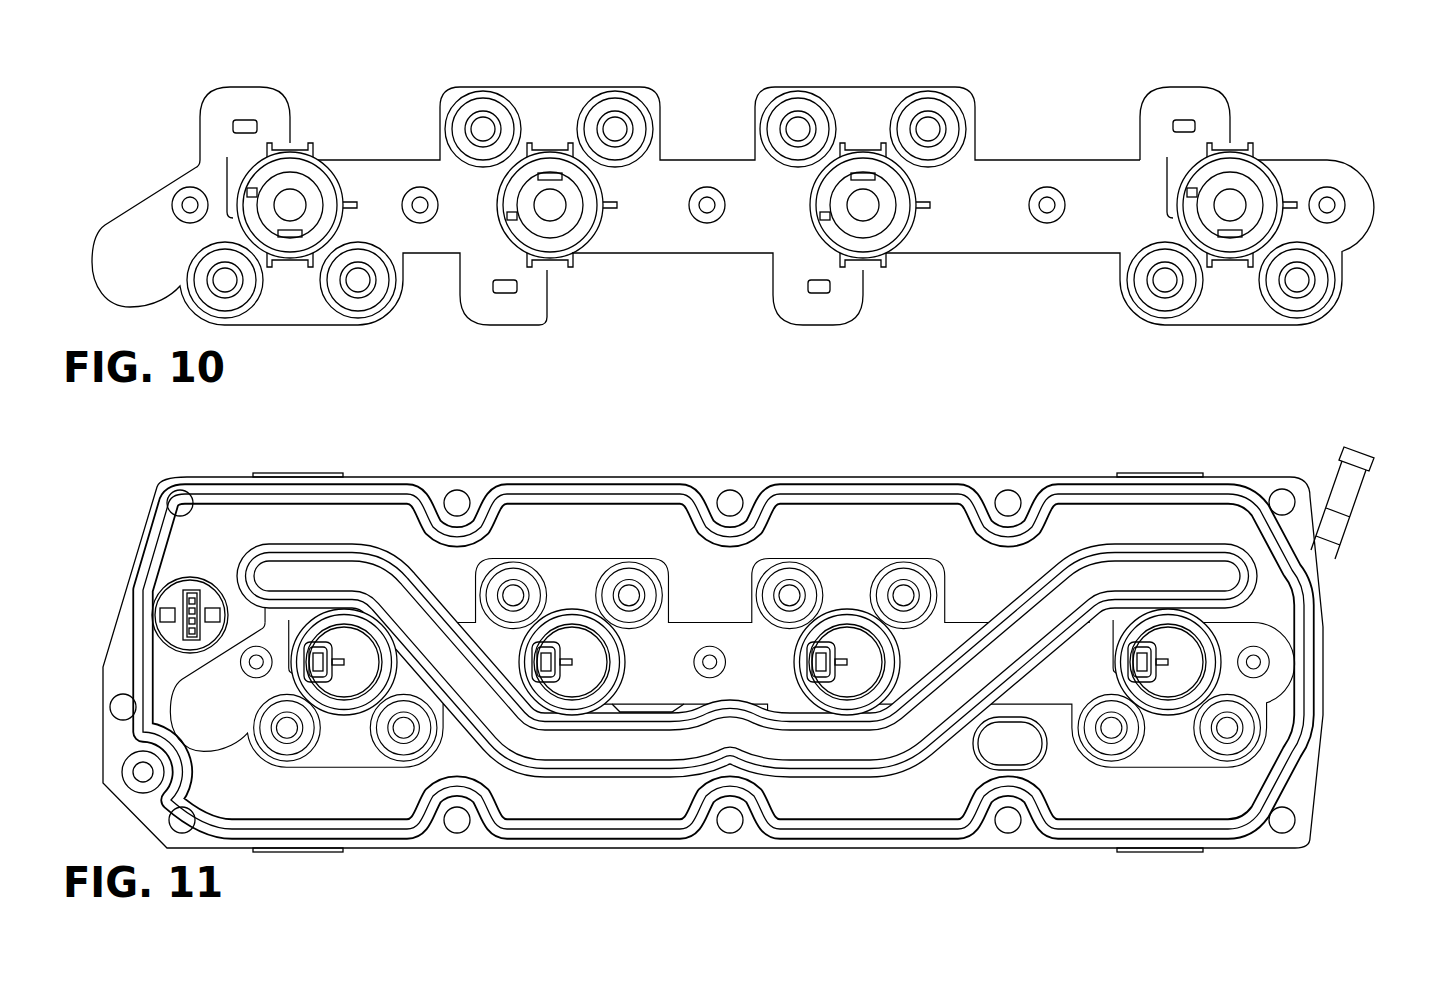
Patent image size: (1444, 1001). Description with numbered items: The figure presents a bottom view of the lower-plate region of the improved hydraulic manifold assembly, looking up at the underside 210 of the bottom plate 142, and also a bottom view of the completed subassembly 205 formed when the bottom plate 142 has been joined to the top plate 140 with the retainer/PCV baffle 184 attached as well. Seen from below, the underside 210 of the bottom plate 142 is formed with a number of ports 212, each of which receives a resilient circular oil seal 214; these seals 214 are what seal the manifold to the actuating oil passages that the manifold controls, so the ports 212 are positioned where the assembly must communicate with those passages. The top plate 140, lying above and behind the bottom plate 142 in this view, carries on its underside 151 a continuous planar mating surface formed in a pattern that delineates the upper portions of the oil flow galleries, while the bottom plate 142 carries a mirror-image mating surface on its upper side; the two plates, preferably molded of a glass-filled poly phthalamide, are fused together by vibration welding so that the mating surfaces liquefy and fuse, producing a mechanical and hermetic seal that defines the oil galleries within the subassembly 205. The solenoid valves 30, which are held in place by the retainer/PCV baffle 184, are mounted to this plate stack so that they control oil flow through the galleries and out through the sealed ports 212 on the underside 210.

In FIG. 10, the bottom plate 142 is at (732, 188).
In FIG. 11, the bottom plate 142 is at (612, 560).
In FIG. 10, the underside 210 is at (643, 172).
In FIG. 10, the ports 212 is at (518, 120).
In FIG. 10, the resilient circular oil seals 214 is at (468, 122).
In FIG. 11, the subassembly 205 is at (760, 621).
In FIG. 11, the underside 151 is at (543, 522).
In FIG. 11, the top plate 140 is at (1038, 477).
In FIG. 11, the retainer/PCV baffle 184 is at (1257, 578).
In FIG. 11, the solenoid valves 30 is at (335, 688).